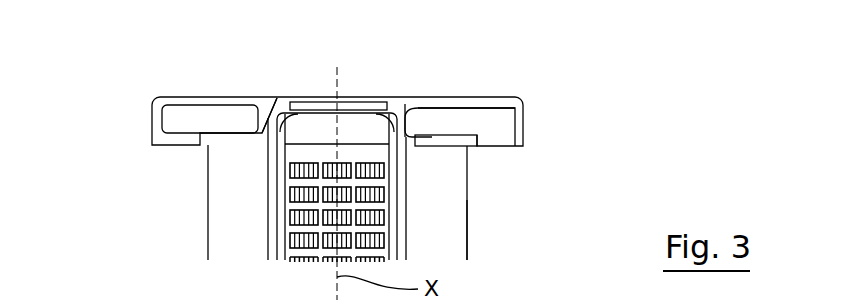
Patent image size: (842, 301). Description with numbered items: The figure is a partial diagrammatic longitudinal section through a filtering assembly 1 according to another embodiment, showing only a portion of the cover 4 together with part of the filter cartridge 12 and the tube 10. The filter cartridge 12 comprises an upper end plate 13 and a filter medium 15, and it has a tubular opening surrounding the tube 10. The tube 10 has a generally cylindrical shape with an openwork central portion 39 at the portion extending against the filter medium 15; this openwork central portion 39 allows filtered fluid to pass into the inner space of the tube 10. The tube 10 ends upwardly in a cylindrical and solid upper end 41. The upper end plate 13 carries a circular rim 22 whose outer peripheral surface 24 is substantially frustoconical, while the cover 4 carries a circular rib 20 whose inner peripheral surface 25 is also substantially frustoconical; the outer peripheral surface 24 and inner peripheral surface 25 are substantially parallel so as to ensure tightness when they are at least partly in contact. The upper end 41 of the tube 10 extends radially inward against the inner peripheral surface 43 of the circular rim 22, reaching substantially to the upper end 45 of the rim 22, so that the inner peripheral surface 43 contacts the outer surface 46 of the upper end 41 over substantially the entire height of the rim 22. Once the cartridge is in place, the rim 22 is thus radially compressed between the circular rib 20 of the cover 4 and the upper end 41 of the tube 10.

The filtering assembly 1 is at (136, 85).
The cover 4 is at (184, 96).
The upper end of the rim 45 is at (270, 96).
The inner peripheral surface of the circular rim 43 is at (323, 132).
The upper end of the tube 41 is at (327, 132).
The circular rim 22 is at (365, 101).
The outer surface of the upper end 46 is at (407, 97).
The outer peripheral surface of the circular rim 24 is at (420, 97).
The circular rib 20 is at (420, 120).
The inner peripheral surface of the circular rib 25 is at (403, 144).
The upper end plate 13 is at (455, 138).
The filter medium 15 is at (438, 180).
The filter cartridge 12 is at (478, 230).
The tube 10 is at (393, 230).
The openwork central portion 39 is at (307, 197).